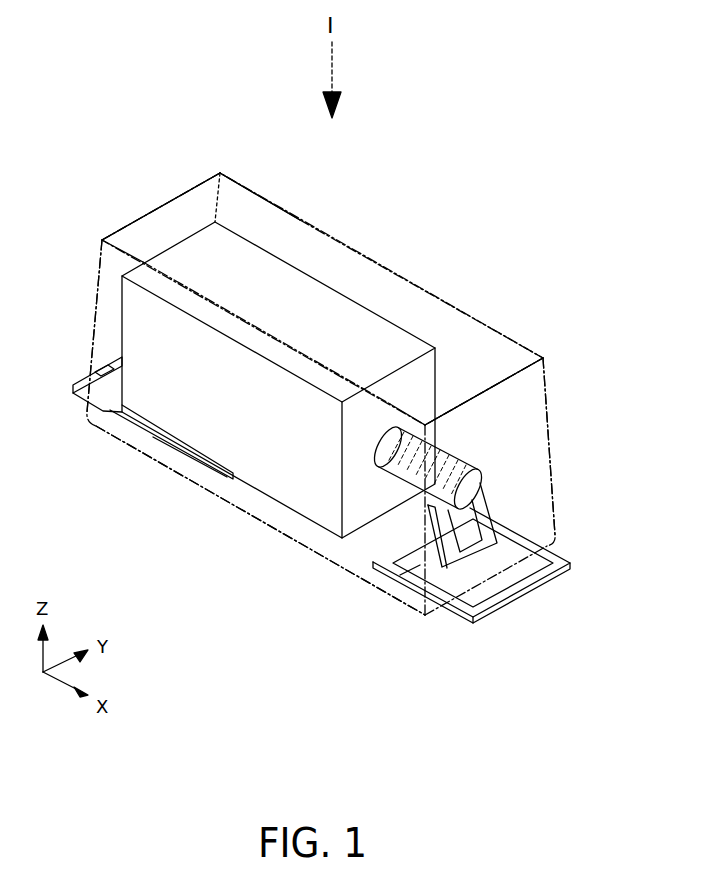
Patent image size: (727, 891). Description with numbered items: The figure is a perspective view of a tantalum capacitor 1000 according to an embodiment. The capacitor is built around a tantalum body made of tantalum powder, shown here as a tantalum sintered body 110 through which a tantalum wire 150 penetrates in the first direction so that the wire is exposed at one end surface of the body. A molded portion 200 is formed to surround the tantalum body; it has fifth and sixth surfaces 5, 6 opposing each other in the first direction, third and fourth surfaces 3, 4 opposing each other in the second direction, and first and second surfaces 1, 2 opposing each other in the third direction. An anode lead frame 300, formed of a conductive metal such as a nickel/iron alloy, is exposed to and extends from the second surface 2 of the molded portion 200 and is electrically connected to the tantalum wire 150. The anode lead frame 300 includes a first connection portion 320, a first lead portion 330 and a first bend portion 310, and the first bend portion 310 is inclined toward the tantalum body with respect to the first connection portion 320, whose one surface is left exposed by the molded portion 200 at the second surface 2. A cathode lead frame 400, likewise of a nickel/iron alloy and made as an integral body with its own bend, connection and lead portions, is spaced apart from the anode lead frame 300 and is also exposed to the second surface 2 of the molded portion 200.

The tantalum capacitor 1000 is at (96, 100).
The first surface 1 is at (262, 205).
The second surface 2 is at (359, 552).
The third surface 3 is at (108, 316).
The fourth surface 4 is at (465, 346).
The fifth surface 5 is at (522, 436).
The sixth surface 6 is at (155, 238).
The tantalum sintered body 110 is at (330, 305).
The tantalum wire 150 is at (470, 482).
The molded portion 200 is at (410, 280).
The anode lead frame 300 is at (457, 634).
The first bend portion 310 is at (512, 530).
The first connection portion 320 is at (412, 566).
The first lead portion 330 is at (478, 606).
The cathode lead frame 400 is at (122, 428).